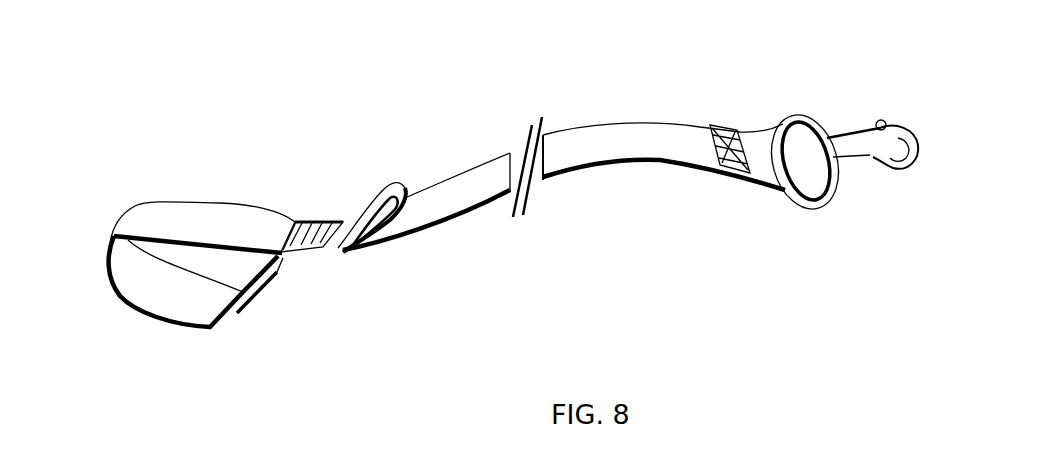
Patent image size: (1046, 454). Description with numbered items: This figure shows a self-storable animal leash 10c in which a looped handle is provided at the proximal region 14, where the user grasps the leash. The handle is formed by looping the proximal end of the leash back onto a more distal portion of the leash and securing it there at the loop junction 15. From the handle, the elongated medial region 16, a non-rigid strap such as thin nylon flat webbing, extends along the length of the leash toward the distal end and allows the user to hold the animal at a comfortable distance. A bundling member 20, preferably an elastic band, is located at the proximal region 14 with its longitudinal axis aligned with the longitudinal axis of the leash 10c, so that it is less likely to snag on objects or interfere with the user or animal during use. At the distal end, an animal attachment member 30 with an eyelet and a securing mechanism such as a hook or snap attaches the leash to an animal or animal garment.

The self-storable leash 10c is at (148, 96).
The proximal region 14 is at (241, 337).
The loop junction 15 is at (332, 235).
The elongated medial region 16 is at (601, 164).
The bundling member 20 is at (364, 166).
The animal attachment member 30 is at (845, 91).